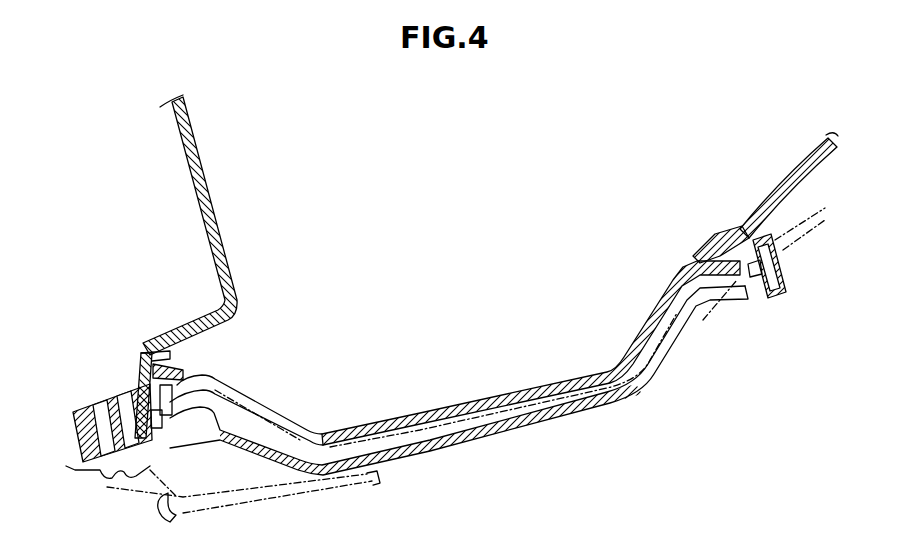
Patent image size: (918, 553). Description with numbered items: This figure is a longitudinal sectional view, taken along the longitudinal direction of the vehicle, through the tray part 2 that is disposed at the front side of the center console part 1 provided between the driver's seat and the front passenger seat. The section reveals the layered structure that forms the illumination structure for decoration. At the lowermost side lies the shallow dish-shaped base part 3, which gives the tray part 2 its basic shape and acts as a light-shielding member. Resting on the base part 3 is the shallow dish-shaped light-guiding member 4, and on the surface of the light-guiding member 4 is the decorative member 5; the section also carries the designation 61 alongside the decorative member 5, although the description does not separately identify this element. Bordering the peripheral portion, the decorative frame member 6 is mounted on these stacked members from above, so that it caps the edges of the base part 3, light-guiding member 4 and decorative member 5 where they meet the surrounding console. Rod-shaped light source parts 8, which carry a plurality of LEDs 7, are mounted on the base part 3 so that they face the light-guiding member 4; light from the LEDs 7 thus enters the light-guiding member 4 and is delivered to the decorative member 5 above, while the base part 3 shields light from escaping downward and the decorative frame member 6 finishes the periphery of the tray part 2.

The center console part 1 is at (784, 168).
The tray part 2 is at (466, 263).
The base part 3 is at (433, 446).
The light-guiding member 4 is at (507, 416).
The decorative member 5 is at (457, 405).
The reinforcing member body 61 is at (597, 411).
The decorative frame member 6 is at (108, 393).
The LEDs 7 is at (456, 336).
The light source parts 8 is at (152, 348).